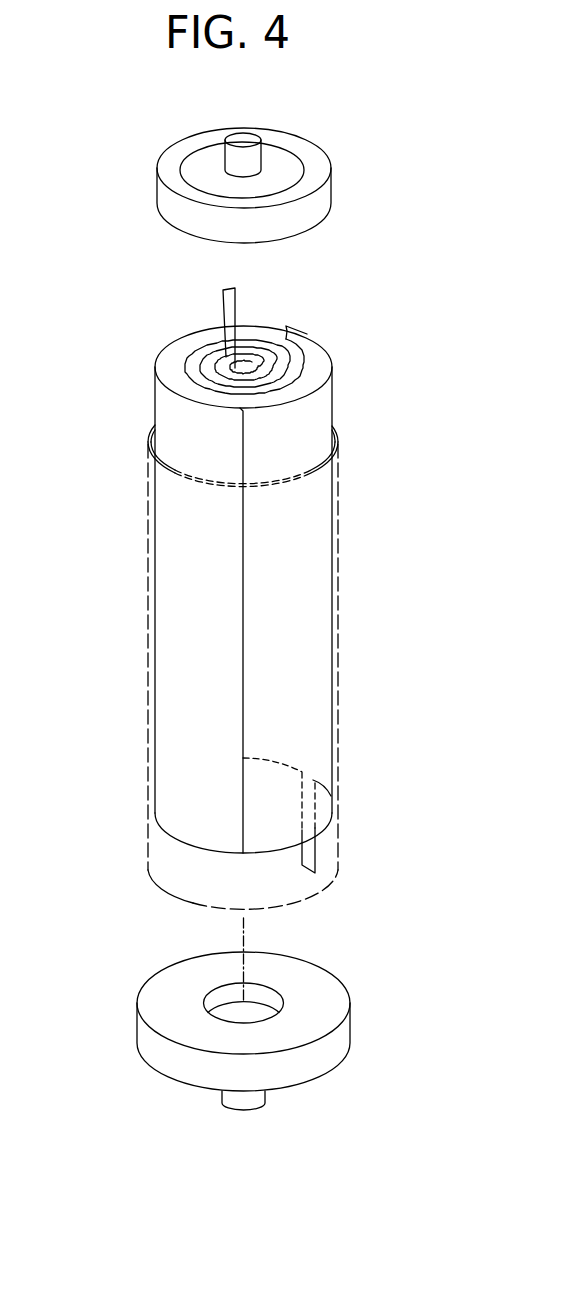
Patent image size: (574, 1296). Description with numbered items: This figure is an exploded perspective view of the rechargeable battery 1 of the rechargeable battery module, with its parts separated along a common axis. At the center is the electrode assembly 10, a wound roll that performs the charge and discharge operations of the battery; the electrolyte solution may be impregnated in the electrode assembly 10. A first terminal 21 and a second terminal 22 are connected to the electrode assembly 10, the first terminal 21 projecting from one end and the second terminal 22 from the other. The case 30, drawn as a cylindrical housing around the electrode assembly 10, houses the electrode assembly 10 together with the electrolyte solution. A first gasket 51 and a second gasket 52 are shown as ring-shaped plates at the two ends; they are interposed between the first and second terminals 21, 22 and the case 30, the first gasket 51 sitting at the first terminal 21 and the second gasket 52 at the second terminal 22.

The rechargeable battery 1 is at (100, 88).
The electrode assembly 10 is at (309, 322).
The first terminal 21 is at (250, 157).
The second terminal 22 is at (248, 1100).
The case 30 is at (163, 839).
The first gasket 51 is at (315, 168).
The second gasket 52 is at (323, 992).